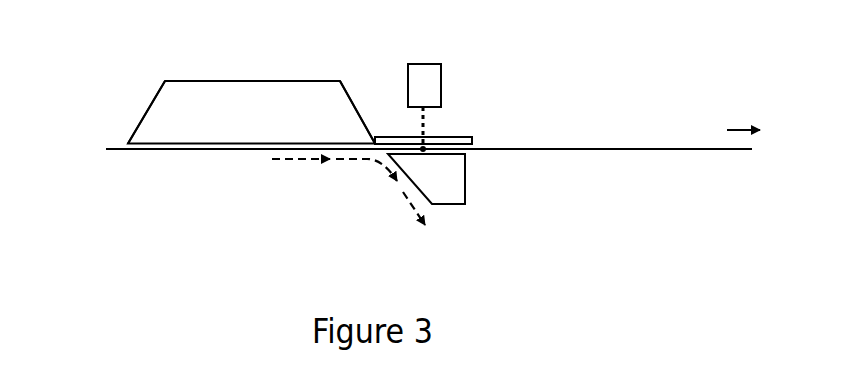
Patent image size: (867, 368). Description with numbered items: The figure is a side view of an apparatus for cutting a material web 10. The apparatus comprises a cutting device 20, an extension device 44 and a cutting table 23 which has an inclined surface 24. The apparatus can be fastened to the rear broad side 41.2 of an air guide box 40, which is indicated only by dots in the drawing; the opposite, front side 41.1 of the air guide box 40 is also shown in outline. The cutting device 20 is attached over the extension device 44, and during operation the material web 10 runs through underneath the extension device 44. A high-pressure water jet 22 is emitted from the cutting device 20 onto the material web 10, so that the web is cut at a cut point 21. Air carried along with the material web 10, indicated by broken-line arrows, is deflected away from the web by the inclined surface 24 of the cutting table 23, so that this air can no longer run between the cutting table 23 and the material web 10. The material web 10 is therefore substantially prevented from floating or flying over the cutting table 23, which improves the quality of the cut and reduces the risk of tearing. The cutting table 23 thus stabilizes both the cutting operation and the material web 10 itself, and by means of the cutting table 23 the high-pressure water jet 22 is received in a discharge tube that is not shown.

The material web 10 is at (187, 150).
The air guide box 40 is at (308, 80).
The inlet side wall of hood 41.1 is at (137, 127).
The rear broad side 41.2 is at (357, 112).
The cutting device 20 is at (441, 72).
The high-pressure water jet 22 is at (427, 127).
The extension device 44 is at (452, 137).
The cut point 21 is at (423, 149).
The cutting table 23 is at (448, 205).
The inclined surface 24 is at (405, 181).